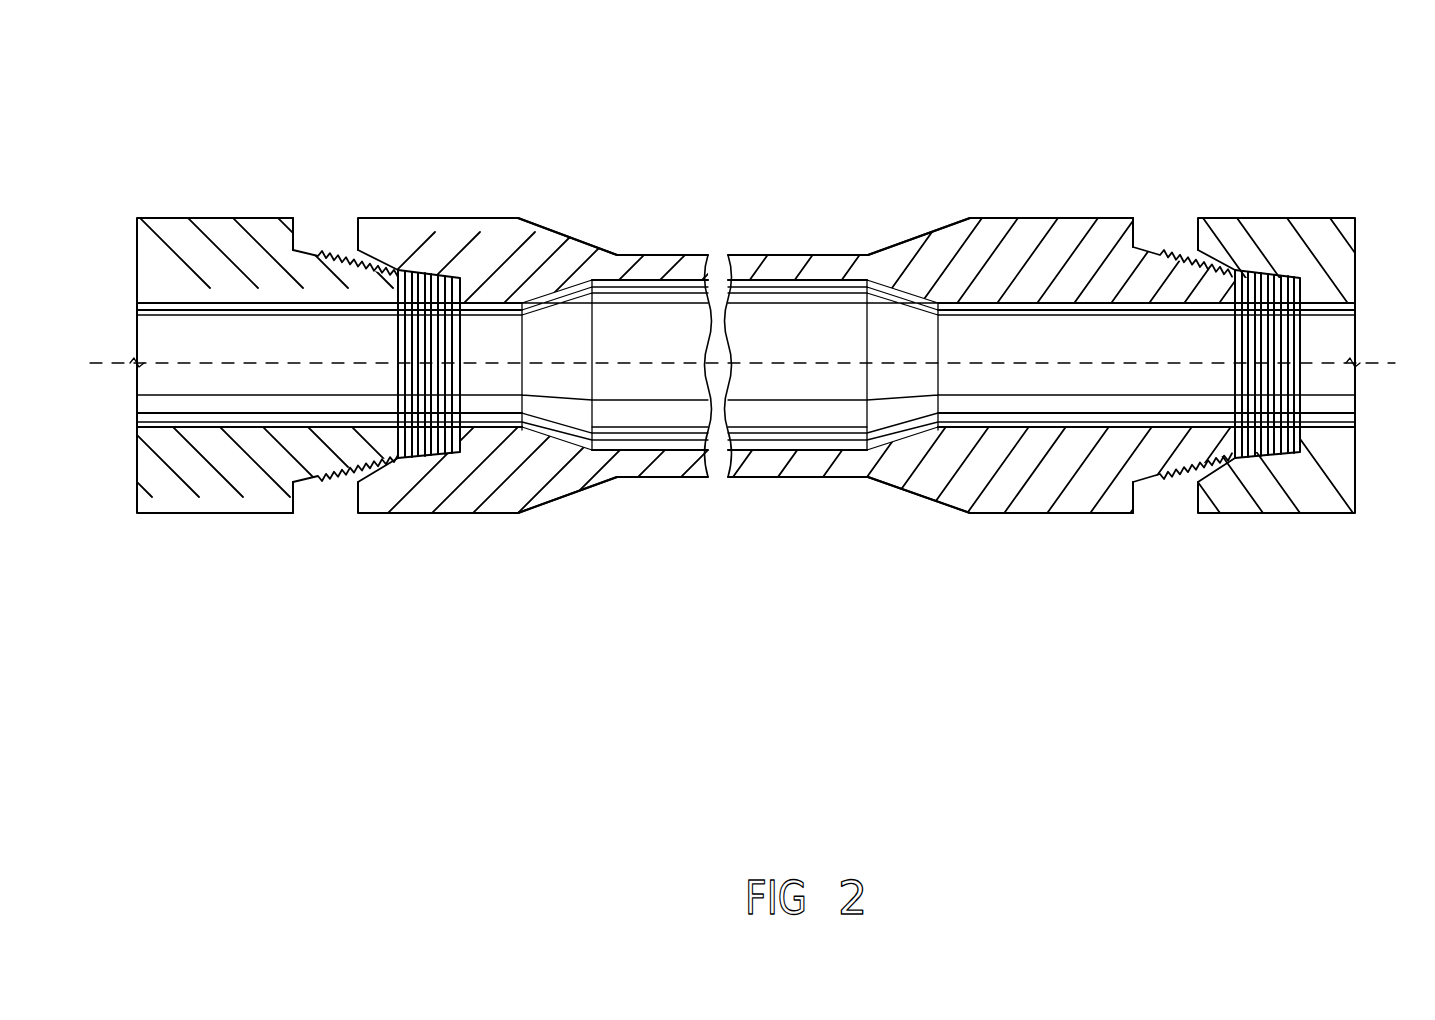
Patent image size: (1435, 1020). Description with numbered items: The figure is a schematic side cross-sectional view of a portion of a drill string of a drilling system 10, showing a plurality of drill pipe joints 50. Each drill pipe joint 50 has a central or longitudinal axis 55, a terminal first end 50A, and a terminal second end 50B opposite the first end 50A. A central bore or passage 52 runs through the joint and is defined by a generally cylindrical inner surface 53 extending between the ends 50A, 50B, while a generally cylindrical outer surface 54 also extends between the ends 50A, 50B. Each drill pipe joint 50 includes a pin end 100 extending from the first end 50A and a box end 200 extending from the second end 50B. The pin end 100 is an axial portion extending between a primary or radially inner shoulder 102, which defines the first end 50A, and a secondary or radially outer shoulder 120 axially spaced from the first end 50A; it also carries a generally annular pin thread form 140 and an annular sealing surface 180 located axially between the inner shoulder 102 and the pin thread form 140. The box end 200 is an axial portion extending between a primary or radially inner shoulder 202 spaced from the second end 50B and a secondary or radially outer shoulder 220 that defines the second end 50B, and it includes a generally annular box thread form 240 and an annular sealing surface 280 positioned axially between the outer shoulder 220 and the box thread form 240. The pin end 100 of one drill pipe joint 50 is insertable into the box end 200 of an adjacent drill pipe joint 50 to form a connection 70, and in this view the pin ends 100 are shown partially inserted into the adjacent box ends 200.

The drilling system 10 is at (350, 71).
The connection 70 is at (340, 132).
The drill pipe joint 50 is at (150, 210).
The first end 50A is at (395, 420).
The second end 50B is at (362, 231).
The central bore 52 is at (201, 354).
The inner surface 53 is at (159, 420).
The outer surface 54 is at (215, 216).
The central axis 55 is at (96, 361).
The pin end 100 is at (342, 397).
The inner shoulder 102 is at (414, 513).
The outer shoulder 120 is at (295, 502).
The pin thread form 140 is at (332, 303).
The sealing surface 180 is at (378, 288).
The box end 200 is at (408, 218).
The inner shoulder 202 is at (476, 513).
The outer shoulder 220 is at (356, 512).
The box thread form 240 is at (437, 224).
The sealing surface 280 is at (500, 218).